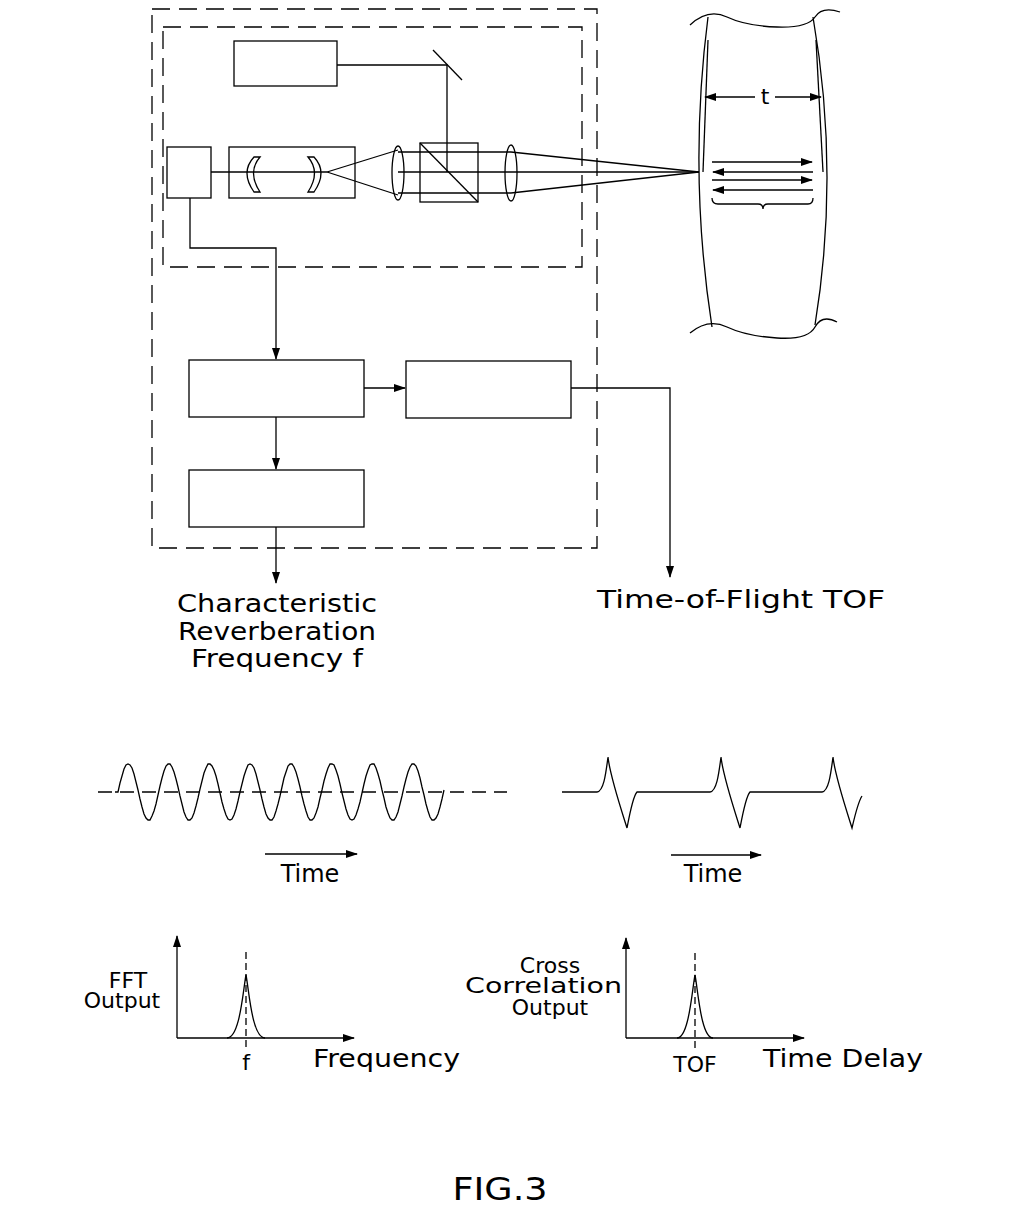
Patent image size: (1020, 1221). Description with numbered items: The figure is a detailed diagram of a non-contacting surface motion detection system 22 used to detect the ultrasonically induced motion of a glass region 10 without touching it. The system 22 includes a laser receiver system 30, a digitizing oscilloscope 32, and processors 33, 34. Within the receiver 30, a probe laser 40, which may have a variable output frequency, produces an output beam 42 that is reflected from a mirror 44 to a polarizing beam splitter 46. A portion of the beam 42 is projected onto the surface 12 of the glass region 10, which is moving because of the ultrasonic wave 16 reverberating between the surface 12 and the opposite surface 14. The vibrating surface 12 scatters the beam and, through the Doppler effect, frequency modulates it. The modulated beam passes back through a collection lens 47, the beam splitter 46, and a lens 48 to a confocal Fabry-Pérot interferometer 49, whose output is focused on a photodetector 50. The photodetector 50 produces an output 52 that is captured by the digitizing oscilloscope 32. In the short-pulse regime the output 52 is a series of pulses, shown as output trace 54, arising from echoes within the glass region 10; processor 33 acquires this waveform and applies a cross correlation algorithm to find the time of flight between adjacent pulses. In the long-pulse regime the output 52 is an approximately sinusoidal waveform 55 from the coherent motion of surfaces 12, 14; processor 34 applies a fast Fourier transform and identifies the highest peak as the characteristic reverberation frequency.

The glass region 10 is at (787, 258).
The surface 12 is at (710, 65).
The glass surface 14 is at (819, 76).
The ultrasonic wave 16 is at (763, 209).
The surface motion detection system 22 is at (152, 157).
The laser receiver system 30 is at (400, 267).
The digitizing oscilloscope 32 is at (233, 359).
The processor 33 is at (490, 361).
The processor 34 is at (364, 505).
The probe laser 40 is at (273, 86).
The output beam 42 is at (407, 63).
The mirror 44 is at (457, 67).
The polarizing beam splitter 46 is at (447, 203).
The collection lens 47 is at (510, 147).
The lens 48 is at (398, 147).
The confocal Fabry-Pérot interferometer 49 is at (262, 147).
The photodetector 50 is at (198, 198).
The photodetector output 52 is at (260, 247).
The output trace 54 is at (687, 792).
The sinusoidal waveform 55 is at (277, 792).